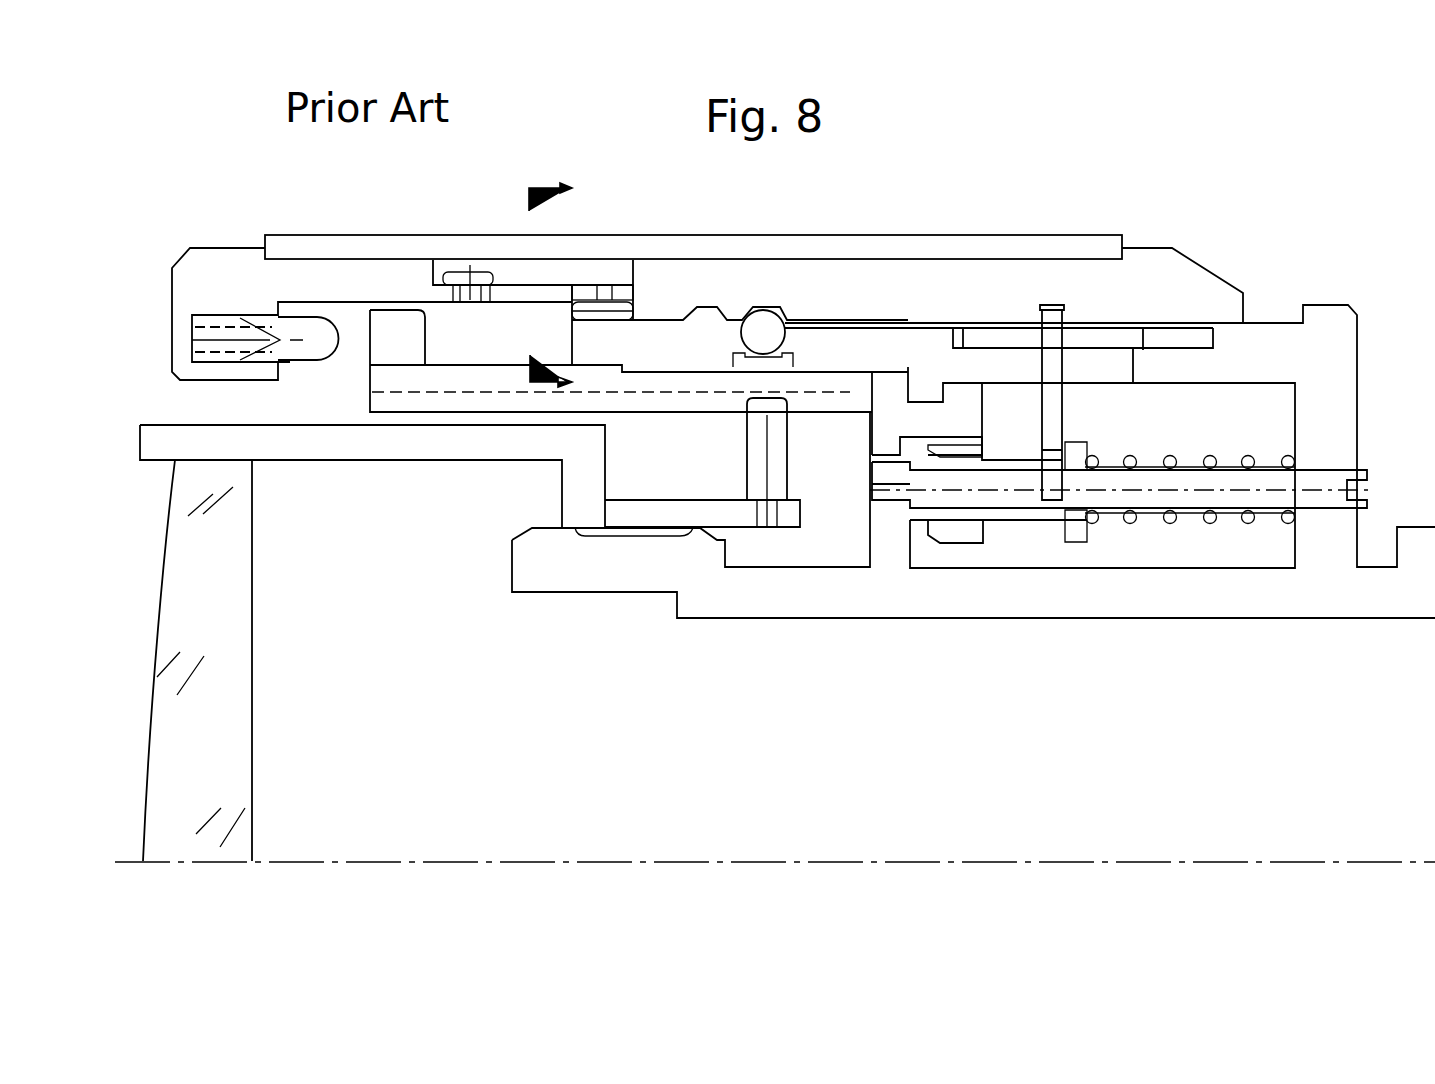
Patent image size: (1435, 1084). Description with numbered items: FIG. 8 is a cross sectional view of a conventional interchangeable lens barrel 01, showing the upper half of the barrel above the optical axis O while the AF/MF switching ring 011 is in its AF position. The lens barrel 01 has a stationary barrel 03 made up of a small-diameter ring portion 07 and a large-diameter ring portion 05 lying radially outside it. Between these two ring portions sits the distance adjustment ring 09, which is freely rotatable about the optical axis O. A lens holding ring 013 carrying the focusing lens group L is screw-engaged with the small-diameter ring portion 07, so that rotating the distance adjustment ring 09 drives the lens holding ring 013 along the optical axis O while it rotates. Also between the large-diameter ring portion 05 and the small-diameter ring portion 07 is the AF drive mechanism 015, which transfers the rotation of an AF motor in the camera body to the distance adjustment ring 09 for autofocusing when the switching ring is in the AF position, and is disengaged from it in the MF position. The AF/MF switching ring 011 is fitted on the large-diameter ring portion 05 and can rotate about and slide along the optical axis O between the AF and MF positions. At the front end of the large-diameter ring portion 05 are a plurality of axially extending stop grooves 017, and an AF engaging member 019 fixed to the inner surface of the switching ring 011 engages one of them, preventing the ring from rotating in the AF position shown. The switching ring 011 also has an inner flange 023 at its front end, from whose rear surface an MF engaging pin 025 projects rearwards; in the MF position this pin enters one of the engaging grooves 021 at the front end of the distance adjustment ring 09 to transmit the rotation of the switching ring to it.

The lens barrel 01 is at (1337, 246).
The stationary barrel 03 is at (1282, 336).
The large-diameter ring portion 05 is at (910, 342).
The small-diameter ring portion 07 is at (1105, 600).
The distance adjustment ring 09 is at (862, 397).
The AF/MF switching ring 011 is at (1187, 268).
The lens holding ring 013 is at (475, 448).
The AF drive mechanism 015 is at (1020, 555).
The stop grooves 017 is at (572, 316).
The AF engaging member 019 is at (612, 292).
The engaging grooves 021 is at (413, 340).
The inner flange 023 is at (233, 375).
The MF engaging pin 025 is at (323, 350).
The focusing lens group L is at (223, 765).
The optical axis O is at (640, 863).